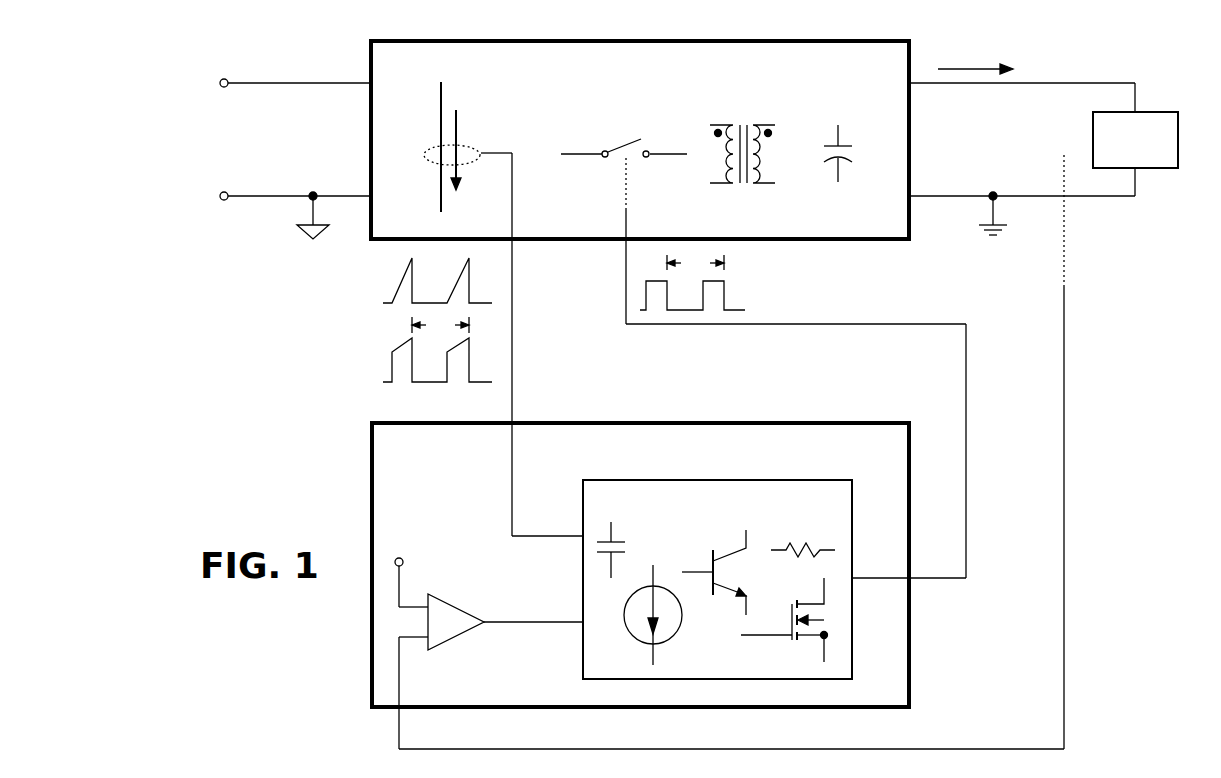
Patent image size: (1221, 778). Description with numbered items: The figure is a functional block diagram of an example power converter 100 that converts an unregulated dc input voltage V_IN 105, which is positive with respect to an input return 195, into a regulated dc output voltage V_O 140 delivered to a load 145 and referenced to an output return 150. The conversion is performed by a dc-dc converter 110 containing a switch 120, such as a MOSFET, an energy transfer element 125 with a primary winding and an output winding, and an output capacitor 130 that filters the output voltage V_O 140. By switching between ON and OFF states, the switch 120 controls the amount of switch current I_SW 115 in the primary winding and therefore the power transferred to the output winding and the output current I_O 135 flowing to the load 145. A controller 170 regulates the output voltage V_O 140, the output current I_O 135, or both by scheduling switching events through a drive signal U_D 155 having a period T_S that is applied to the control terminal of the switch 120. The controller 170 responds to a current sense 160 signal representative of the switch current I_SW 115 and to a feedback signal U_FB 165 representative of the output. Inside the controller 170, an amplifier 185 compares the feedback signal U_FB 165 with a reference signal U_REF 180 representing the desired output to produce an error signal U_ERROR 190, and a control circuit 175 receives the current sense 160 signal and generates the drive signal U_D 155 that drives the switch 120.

The power converter 100 is at (273, 375).
The input voltage 105 is at (243, 146).
The dc-dc converter 110 is at (626, 39).
The switch current 115 is at (458, 104).
The switch 120 is at (620, 137).
The energy transfer element 125 is at (745, 192).
The output capacitor 130 is at (851, 132).
The output current 135 is at (993, 55).
The output voltage 140 is at (1022, 145).
The load 145 is at (1155, 107).
The output return 150 is at (977, 240).
The drive signal 155 is at (618, 316).
The current sense 160 is at (521, 352).
The feedback signal 165 is at (1073, 437).
The controller 170 is at (767, 418).
The control circuit 175 is at (766, 478).
The reference signal 180 is at (407, 588).
The amplifier 185 is at (452, 645).
The error signal 190 is at (512, 627).
The input return 195 is at (305, 239).